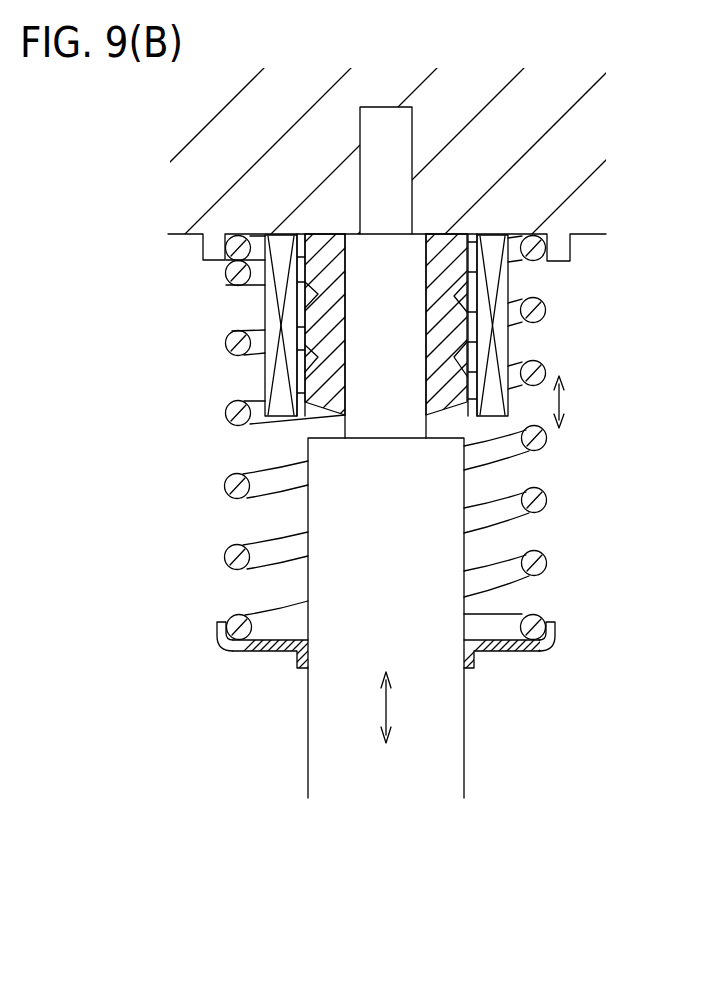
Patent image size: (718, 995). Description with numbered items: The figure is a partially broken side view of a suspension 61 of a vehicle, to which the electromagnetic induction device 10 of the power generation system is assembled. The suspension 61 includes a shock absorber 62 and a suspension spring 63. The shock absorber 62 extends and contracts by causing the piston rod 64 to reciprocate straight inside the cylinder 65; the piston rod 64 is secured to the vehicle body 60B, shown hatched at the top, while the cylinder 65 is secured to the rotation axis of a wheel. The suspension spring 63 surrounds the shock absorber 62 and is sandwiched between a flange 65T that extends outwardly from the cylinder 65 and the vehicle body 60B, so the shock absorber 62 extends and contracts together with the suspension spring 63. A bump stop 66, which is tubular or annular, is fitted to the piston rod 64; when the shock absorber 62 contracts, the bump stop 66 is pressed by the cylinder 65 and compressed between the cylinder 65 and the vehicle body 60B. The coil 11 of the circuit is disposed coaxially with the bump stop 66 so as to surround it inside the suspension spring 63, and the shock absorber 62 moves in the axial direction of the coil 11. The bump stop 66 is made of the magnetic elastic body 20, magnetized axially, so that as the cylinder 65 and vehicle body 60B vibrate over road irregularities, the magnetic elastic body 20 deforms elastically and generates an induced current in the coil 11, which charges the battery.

The vehicle body 60B is at (190, 188).
The electromagnetic induction device 10 is at (542, 290).
The bump stop 66 is at (312, 296).
The coil 11 is at (497, 343).
The magnetic elastic body 20 is at (320, 371).
The shock absorber 62 is at (293, 516).
The piston rod 64 is at (368, 425).
The cylinder 65 is at (330, 515).
The suspension spring 63 is at (547, 498).
The flange 65T is at (532, 651).
The suspension 61 is at (600, 592).